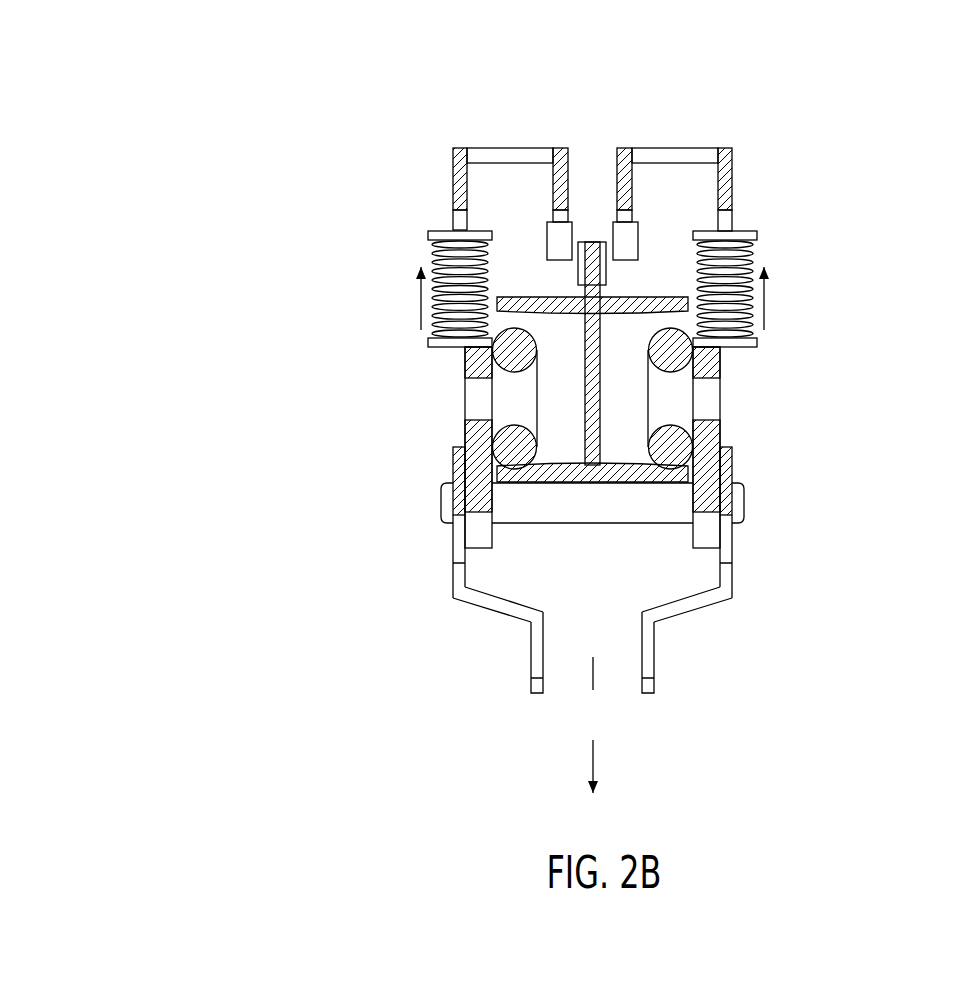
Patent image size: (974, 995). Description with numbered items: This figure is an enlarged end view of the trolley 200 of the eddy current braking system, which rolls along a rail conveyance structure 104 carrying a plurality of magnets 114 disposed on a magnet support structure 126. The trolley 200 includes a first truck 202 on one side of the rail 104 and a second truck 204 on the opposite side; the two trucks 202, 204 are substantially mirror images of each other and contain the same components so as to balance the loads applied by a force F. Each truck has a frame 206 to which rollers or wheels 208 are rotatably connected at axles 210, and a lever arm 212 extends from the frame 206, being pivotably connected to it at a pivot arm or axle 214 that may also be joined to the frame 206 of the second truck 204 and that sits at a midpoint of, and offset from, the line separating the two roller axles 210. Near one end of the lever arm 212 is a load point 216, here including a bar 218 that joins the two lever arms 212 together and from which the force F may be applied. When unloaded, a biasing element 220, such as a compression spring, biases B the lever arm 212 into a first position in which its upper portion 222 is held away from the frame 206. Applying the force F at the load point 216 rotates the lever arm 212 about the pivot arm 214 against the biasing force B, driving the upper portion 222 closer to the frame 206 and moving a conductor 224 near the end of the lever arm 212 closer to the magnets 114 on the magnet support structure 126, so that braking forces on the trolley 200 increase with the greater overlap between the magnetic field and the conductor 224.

The trolley 200 is at (277, 312).
The first truck 202 is at (385, 558).
The second truck 204 is at (815, 463).
The frame 206 is at (480, 403).
The rollers or wheels 208 is at (505, 347).
The axles 210 is at (510, 395).
The lever arm 212 is at (477, 603).
The pivot arm or axle 214 is at (737, 507).
The load point 216 is at (538, 647).
The bar 218 is at (593, 691).
The biasing element 220 is at (430, 252).
The upper portion 222 is at (562, 190).
The conductor 224 is at (460, 167).
The rail conveyance structure 104 is at (628, 472).
The magnets 114 is at (602, 240).
The magnet support structure 126 is at (580, 240).
The biasing force B is at (589, 298).
The force F is at (604, 766).